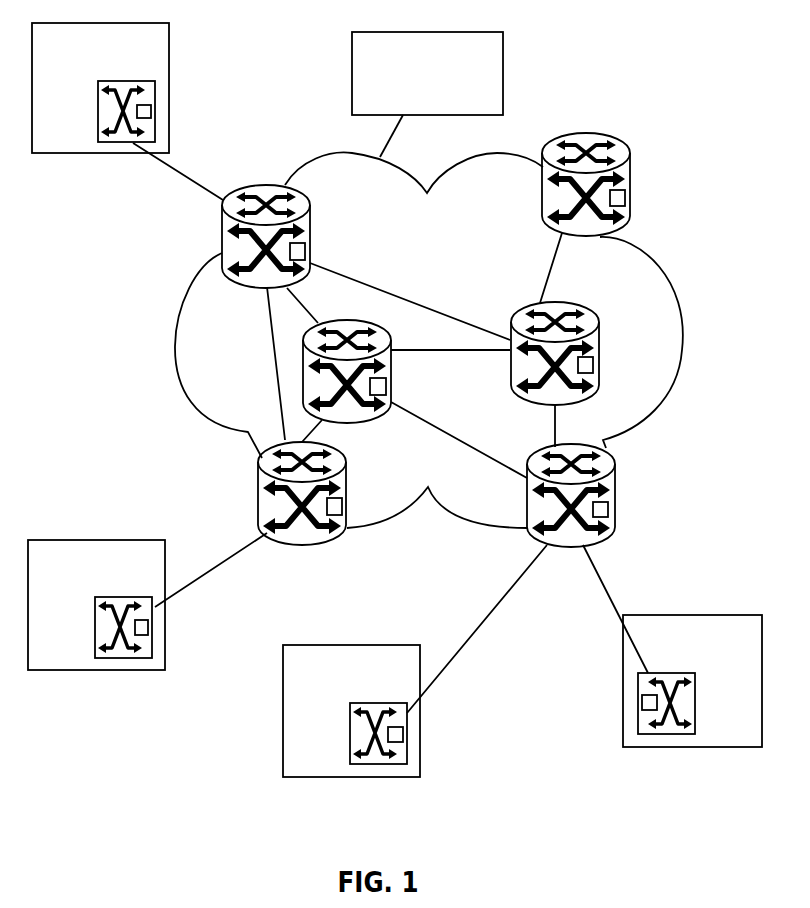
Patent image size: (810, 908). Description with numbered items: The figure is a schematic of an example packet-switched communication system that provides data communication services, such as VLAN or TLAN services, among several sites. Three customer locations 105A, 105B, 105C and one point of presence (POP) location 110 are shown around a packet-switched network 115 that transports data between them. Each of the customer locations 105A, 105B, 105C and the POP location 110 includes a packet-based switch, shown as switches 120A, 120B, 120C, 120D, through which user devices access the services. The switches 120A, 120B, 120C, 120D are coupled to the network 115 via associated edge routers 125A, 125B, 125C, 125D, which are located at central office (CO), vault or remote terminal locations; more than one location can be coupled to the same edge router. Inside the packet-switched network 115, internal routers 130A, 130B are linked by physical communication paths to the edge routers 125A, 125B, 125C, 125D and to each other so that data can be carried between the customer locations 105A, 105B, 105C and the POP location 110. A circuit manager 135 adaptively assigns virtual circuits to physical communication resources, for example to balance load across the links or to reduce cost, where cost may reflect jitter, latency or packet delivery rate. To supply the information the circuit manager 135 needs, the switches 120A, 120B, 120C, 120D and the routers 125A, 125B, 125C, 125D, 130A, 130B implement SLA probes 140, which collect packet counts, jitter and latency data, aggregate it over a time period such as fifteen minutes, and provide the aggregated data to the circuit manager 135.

The customer location 105A is at (90, 101).
The customer location 105B is at (88, 617).
The customer location 105C is at (342, 722).
The point of presence (POP) location 110 is at (720, 687).
The packet-switched network 115 is at (449, 300).
The switch 120A is at (157, 135).
The switch 120B is at (135, 658).
The switch 120C is at (388, 763).
The switch 120D is at (648, 733).
The edge router 125A is at (347, 470).
The edge router 125B is at (607, 533).
The edge router 125C is at (622, 138).
The edge router 125D is at (310, 220).
The internal router 130A is at (357, 423).
The internal router 130B is at (555, 300).
The circuit manager 135 is at (409, 106).
The SLA probe 140 is at (298, 248).